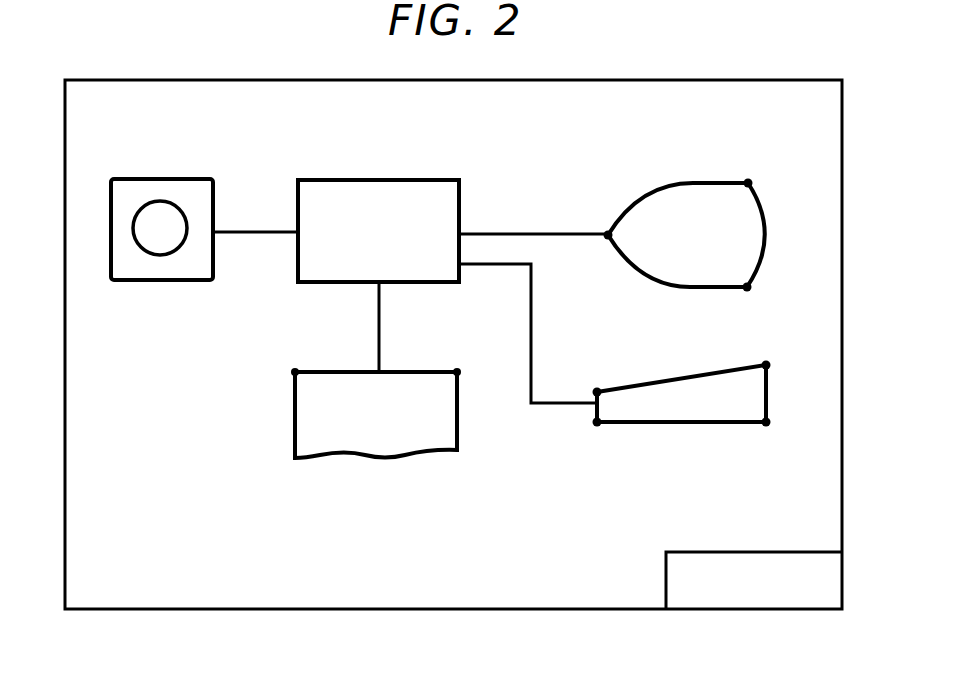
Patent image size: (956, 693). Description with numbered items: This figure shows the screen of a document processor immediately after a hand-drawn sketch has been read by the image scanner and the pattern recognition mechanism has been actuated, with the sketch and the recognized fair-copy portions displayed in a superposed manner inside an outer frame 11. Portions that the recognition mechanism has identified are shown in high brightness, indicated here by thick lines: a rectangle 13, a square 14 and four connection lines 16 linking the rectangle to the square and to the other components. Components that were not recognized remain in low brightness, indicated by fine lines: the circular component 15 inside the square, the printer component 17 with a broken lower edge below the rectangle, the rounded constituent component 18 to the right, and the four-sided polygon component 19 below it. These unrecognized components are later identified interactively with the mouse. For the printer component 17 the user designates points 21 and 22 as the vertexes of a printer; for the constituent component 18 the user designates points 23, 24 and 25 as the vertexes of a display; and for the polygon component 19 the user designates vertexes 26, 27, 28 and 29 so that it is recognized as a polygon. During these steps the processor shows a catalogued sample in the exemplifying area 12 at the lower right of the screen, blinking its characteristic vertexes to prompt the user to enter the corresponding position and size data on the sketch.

The optical mask / exemplifying area frame 11 is at (770, 80).
The exemplifying area 12 is at (748, 552).
The rectangle 13 is at (377, 180).
The square 14 is at (163, 179).
The component figure 15 is at (157, 255).
The connection lines 16 is at (257, 232).
The component figure 17 is at (338, 458).
The constituent component 18 is at (694, 183).
The component figure 19 is at (684, 375).
The point 21 is at (295, 372).
The point 22 is at (457, 372).
The point 23 is at (748, 183).
The point 24 is at (747, 287).
The point 25 is at (608, 235).
The vertex 26 is at (766, 365).
The vertex 27 is at (766, 422).
The vertex 28 is at (597, 422).
The vertex 29 is at (597, 392).